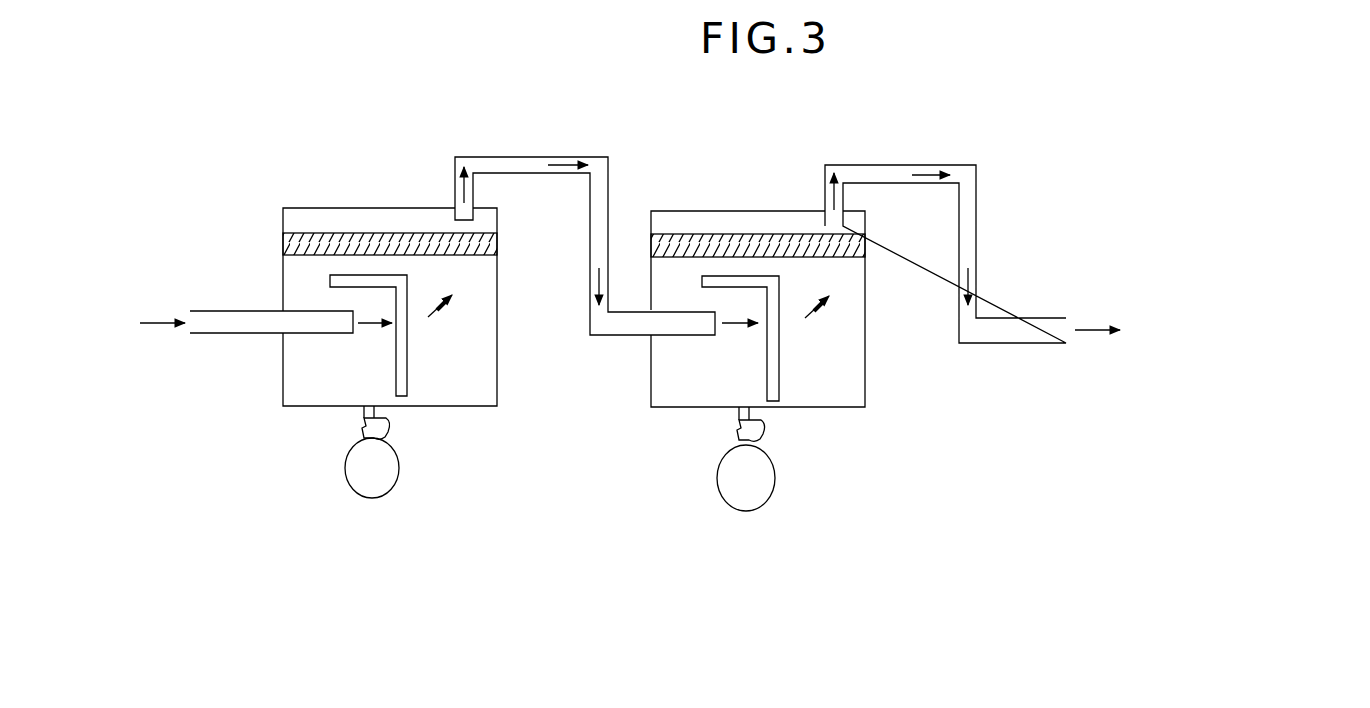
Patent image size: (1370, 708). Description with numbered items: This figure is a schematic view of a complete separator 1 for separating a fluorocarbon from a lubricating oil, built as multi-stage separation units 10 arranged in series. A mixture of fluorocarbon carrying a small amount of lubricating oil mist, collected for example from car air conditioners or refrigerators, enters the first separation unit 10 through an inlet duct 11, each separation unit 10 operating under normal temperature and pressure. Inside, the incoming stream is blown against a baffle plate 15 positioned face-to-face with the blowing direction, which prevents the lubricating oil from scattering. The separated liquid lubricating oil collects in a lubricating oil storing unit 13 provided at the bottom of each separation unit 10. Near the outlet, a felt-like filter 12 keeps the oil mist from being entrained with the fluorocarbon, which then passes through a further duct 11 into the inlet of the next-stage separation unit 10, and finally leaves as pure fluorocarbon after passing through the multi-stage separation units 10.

The separator 1 is at (603, 440).
The separation unit 10 is at (497, 320).
The duct 11 is at (218, 311).
The felt-like filter 12 is at (366, 233).
The lubricating oil storing unit 13 is at (399, 466).
The baffle plate 15 is at (407, 371).